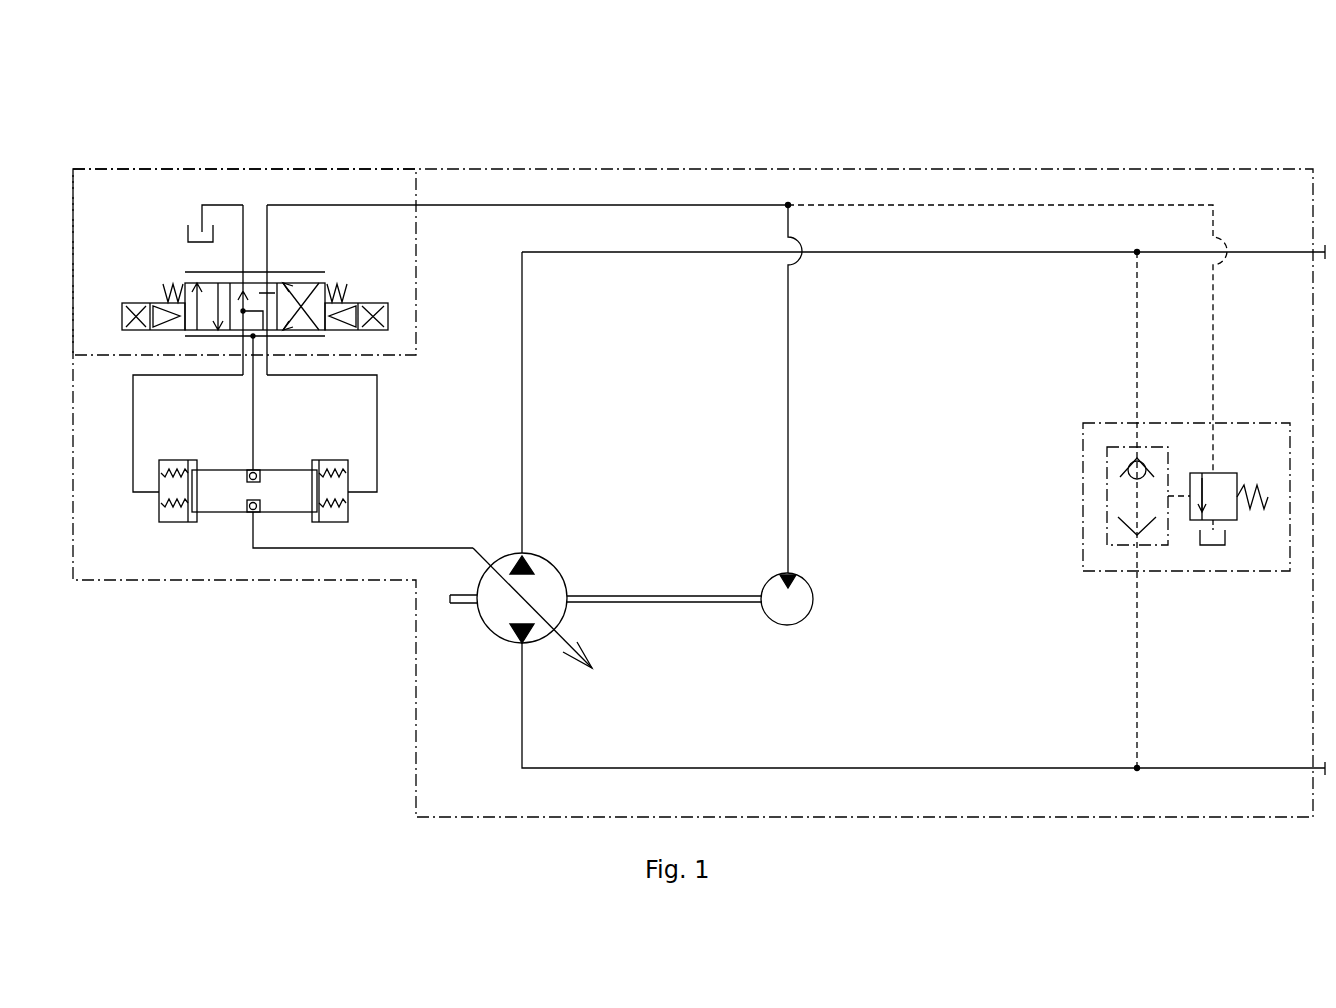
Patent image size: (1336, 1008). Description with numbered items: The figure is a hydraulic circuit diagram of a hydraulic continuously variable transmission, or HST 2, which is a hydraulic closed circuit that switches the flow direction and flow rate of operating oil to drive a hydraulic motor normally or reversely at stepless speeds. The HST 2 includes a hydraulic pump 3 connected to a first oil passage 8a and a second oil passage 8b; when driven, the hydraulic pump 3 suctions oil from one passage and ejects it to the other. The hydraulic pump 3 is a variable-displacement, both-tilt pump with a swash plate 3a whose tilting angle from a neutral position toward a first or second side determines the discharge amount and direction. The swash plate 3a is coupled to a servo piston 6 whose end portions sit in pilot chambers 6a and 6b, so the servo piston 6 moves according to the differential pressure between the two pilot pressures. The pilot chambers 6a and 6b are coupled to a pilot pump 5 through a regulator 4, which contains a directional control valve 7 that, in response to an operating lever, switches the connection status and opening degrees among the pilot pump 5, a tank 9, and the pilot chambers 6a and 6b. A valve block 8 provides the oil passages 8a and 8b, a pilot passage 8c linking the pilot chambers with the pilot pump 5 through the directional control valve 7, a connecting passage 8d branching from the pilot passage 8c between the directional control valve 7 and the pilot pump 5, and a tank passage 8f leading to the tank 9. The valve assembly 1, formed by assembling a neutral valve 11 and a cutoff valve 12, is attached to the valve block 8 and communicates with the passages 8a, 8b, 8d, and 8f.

The valve assembly 1 is at (1151, 456).
The hydraulic continuously variable transmission (HST) 2 is at (1298, 108).
The hydraulic pump 3 is at (606, 584).
The swash plate 3a is at (500, 572).
The regulator 4 is at (329, 188).
The pilot pump 5 is at (805, 600).
The servo piston 6 is at (303, 488).
The pilot chamber 6a is at (176, 466).
The pilot chamber 6b is at (332, 466).
The directional control valve 7 is at (320, 285).
The valve block 8 is at (796, 437).
The first oil passage 8a is at (963, 252).
The second oil passage 8b is at (950, 768).
The pilot passage 8c is at (692, 205).
The connecting passage 8d is at (1215, 340).
The tank passage 8f is at (1225, 537).
The tank 9 is at (196, 228).
The neutral valve 11 is at (1117, 468).
The cutoff valve 12 is at (1222, 483).